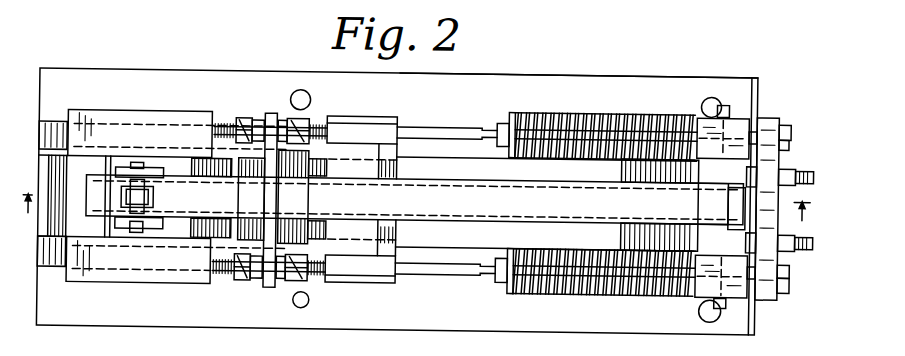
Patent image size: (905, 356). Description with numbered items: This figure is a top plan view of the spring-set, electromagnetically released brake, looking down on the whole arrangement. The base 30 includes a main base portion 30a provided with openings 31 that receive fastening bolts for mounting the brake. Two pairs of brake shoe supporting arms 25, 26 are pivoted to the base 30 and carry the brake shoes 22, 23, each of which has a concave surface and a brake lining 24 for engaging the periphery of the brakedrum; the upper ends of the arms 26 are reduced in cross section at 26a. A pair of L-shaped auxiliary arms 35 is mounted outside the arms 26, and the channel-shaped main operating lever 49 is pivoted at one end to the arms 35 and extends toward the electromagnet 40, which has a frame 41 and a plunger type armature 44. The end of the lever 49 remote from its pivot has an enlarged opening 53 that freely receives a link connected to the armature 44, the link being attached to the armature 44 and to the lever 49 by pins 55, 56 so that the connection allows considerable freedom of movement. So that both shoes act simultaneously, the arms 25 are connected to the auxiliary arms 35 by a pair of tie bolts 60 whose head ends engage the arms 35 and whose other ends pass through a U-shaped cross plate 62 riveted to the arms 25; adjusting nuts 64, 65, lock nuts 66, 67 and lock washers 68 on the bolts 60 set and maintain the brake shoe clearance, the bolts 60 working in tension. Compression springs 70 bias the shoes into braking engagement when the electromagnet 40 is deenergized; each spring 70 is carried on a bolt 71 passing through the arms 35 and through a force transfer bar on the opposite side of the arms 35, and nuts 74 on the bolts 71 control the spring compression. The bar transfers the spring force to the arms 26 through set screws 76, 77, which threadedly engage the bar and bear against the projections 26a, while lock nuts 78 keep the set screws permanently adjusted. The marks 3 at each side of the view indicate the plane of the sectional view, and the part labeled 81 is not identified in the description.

The section line 3- 3 is at (417, 220).
The brake shoe 22 is at (363, 112).
The brake shoe 23 is at (778, 108).
The brake lining 24 is at (624, 164).
The brake shoe supporting arms 25 is at (319, 160).
The brake shoe supporting arms 26 is at (707, 223).
The reduced cross section portion 26a is at (737, 218).
The supporting base 30 is at (528, 67).
The main base portion 30a is at (598, 80).
The openings 31 is at (292, 91).
The auxiliary arms 35 is at (742, 108).
The electromagnet 40 is at (134, 87).
The frame 41 is at (85, 281).
The plunger type armature 44 is at (167, 223).
The main operating lever 49 is at (502, 194).
The opening 53 is at (154, 193).
The pin 55 is at (144, 161).
The pin 56 is at (132, 214).
The tie bolts 60 is at (434, 122).
The cross plate 62 is at (271, 110).
The adjusting nut 64 is at (268, 281).
The adjusting nut 65 is at (293, 281).
The lock nut 66 is at (245, 282).
The lock nut 67 is at (305, 284).
The lock washers 68 is at (258, 280).
The compression springs 70 is at (523, 108).
The spring supporting bolts 71 is at (604, 112).
The nuts 74 is at (503, 113).
The set screw 76 is at (804, 156).
The set screw 77 is at (793, 250).
The lock nuts 78 is at (793, 127).
The coupling bracket 81 is at (312, 186).